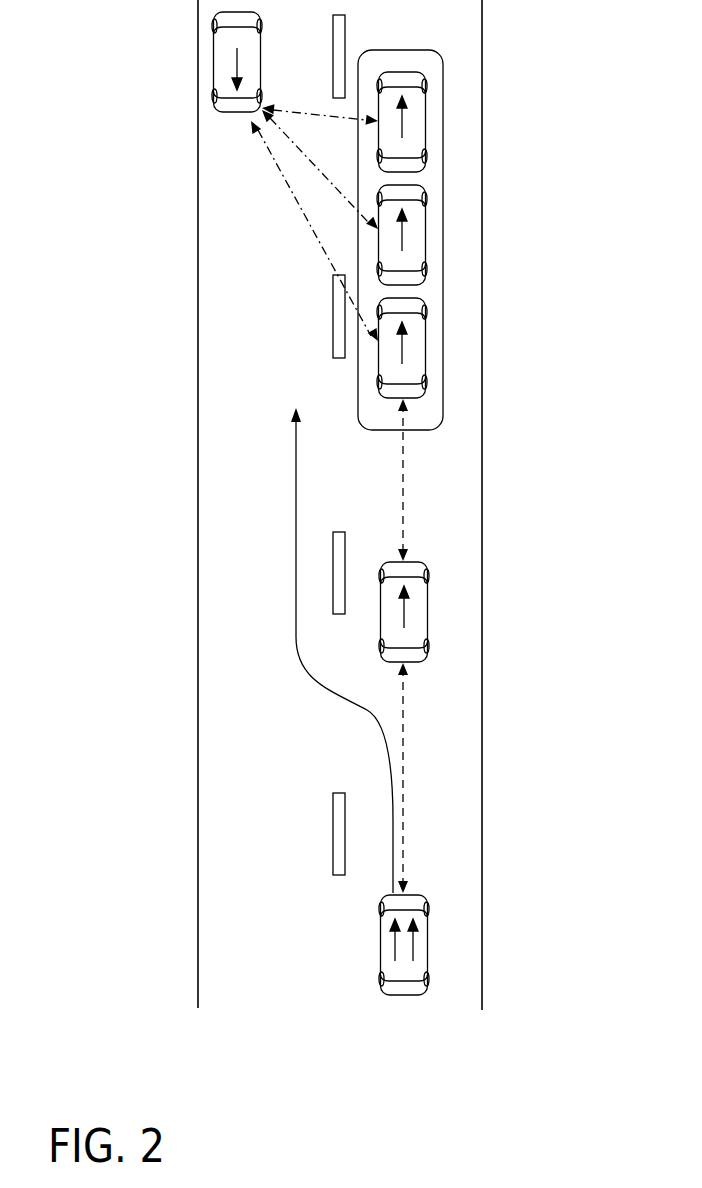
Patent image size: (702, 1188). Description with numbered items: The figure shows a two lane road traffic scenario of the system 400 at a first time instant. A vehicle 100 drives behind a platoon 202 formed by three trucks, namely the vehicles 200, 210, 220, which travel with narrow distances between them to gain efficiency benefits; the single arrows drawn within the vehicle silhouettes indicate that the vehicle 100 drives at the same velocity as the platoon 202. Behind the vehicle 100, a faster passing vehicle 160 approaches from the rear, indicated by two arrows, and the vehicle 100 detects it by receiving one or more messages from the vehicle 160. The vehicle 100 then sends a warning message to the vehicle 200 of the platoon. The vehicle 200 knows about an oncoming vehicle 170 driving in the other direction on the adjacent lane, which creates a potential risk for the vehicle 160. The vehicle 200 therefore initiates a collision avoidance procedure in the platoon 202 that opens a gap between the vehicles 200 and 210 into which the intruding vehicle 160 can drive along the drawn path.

The vehicle 100 is at (425, 623).
The passing vehicle 160 is at (425, 961).
The oncoming vehicle 170 is at (215, 67).
The platooning vehicle 200 is at (424, 358).
The platoon vehicle 210 is at (424, 243).
The platoon vehicle 220 is at (424, 121).
The platoon 202 is at (443, 408).
The system 400 is at (128, 1077).